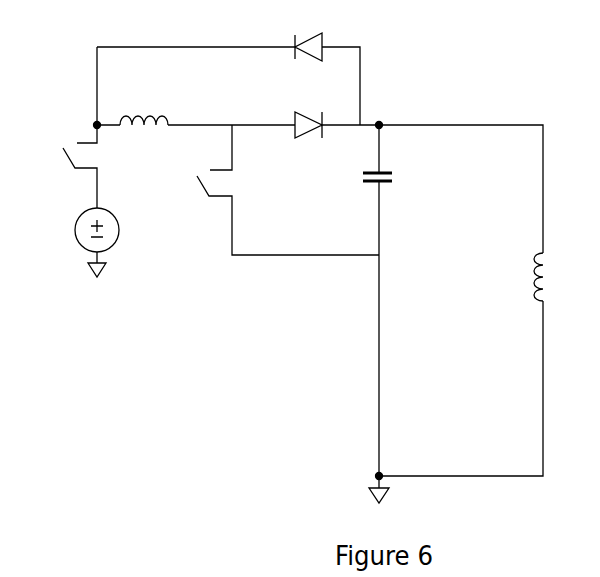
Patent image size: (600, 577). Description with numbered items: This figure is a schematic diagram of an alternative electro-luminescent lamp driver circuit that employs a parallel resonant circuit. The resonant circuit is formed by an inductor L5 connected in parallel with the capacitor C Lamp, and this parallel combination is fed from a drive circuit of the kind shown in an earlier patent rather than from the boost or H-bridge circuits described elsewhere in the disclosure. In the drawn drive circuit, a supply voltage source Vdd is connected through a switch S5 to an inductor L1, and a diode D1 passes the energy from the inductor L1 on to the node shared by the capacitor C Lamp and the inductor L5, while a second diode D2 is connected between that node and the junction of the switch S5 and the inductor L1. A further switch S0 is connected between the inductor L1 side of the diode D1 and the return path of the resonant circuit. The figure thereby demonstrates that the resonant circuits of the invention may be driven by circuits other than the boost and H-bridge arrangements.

The diode D2 is at (308, 32).
The diode D1 is at (307, 108).
The inductor L1 is at (144, 103).
The switch S5 is at (69, 161).
The supply voltage source Vdd is at (122, 242).
The switch S0 is at (285, 190).
The capacitor C lamp C Lamp is at (426, 179).
The inductor L5 is at (519, 277).